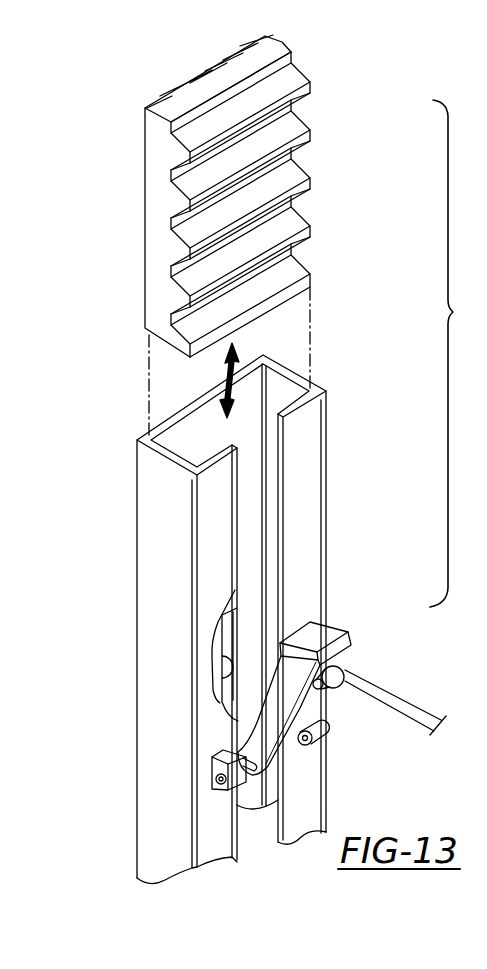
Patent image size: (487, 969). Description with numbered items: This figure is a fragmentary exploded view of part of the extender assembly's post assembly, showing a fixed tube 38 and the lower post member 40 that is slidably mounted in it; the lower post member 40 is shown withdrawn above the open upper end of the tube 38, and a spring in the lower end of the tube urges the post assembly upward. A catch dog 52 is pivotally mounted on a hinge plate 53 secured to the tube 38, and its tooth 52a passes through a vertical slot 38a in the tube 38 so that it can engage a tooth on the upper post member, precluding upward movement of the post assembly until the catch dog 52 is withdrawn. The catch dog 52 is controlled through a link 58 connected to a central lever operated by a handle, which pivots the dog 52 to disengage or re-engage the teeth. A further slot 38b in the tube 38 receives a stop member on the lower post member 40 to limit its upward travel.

The lower post member 40 is at (142, 170).
The fixed tube 38 is at (137, 618).
The vertical slot 38a is at (236, 474).
The slot 38b is at (222, 678).
The catch dog 52 is at (308, 705).
The tooth 52a is at (281, 651).
The hinge plate 53 is at (210, 800).
The link 58 is at (388, 692).